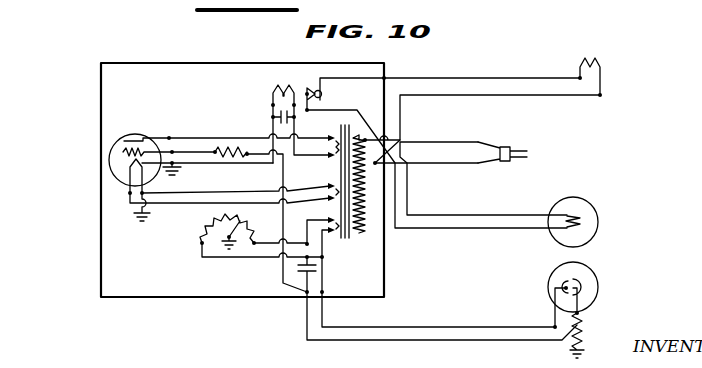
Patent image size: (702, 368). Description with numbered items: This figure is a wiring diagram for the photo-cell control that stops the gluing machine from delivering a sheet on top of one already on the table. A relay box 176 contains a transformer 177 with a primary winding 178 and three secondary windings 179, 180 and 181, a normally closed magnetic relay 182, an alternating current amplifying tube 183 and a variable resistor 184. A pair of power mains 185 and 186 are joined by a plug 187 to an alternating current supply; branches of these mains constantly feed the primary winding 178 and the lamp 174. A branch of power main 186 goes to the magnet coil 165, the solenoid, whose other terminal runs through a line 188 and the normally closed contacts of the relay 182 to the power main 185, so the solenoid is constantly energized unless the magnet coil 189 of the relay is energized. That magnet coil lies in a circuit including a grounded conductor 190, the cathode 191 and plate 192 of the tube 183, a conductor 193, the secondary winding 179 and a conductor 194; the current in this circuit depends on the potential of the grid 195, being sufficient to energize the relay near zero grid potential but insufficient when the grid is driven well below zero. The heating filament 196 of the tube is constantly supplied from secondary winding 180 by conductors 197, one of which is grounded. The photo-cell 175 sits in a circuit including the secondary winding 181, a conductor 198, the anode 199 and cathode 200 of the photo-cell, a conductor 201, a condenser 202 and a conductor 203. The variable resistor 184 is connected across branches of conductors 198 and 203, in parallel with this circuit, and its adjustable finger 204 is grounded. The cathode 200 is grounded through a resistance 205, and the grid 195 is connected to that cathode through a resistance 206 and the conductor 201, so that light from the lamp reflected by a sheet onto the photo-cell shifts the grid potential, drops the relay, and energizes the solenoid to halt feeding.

The magnet coil 165 is at (602, 63).
The lamp 174 is at (589, 203).
The photo-cell 175 is at (595, 268).
The relay box 176 is at (163, 62).
The transformer 177 is at (352, 238).
The primary winding 178 is at (362, 213).
The secondary winding 179 is at (332, 162).
The secondary winding 180 is at (307, 222).
The secondary winding 181 is at (333, 233).
The magnetic relay 182 is at (298, 96).
The alternating current amplifying tube 183 is at (111, 170).
The variable resistor 184 is at (203, 232).
The power main 185 is at (337, 110).
The power main 186 is at (473, 95).
The plug 187 is at (510, 147).
The line 188 is at (428, 78).
The magnet coil 189 is at (274, 94).
The grounded conductor 190 is at (184, 162).
The cathode 191 is at (121, 160).
The plate 192 is at (126, 140).
The conductor 193 is at (180, 133).
The conductor 194 is at (296, 128).
The grid 195 is at (124, 152).
The heating filament 196 is at (133, 174).
The conductors 197 is at (188, 204).
The conductor 198 is at (393, 326).
The anode 199 is at (560, 287).
The cathode 200 is at (577, 286).
The conductor 201 is at (470, 341).
The condenser 202 is at (302, 272).
The conductor 203 is at (305, 222).
The adjustable finger 204 is at (252, 245).
The resistance 205 is at (583, 329).
The resistance 206 is at (228, 147).